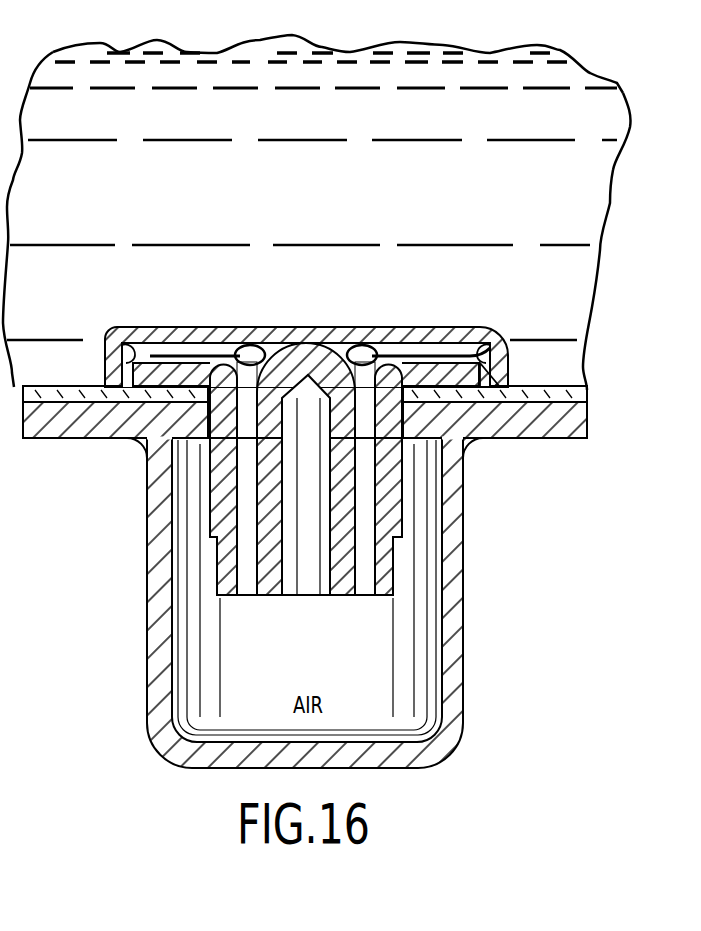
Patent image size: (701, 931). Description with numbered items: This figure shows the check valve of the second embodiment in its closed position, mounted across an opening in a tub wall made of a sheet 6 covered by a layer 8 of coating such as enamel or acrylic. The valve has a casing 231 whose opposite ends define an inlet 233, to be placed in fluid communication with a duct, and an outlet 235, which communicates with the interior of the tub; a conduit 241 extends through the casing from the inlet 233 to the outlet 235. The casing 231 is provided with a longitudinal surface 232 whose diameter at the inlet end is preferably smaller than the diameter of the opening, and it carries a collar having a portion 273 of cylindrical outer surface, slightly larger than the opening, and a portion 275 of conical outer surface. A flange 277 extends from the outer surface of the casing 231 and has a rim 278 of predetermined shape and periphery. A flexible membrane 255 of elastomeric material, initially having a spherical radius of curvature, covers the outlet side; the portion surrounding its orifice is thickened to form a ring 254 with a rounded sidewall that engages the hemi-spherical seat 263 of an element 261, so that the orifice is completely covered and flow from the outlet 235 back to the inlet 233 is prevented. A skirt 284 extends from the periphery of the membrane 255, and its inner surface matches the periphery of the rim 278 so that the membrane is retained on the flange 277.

The sheet 6 is at (584, 428).
The layer of coating 8 is at (586, 394).
The casing 231 is at (223, 507).
The longitudinal surface 232 is at (383, 573).
The inlet 233 is at (250, 590).
The outlet 235 is at (180, 355).
The conduit 241 is at (240, 588).
The ring 254 is at (247, 347).
The flexible membrane 255 is at (500, 343).
The element 261 is at (327, 590).
The seat 263 is at (322, 340).
The portion of cylindrical outer surface 273 is at (415, 500).
The portion of conical outer surface 275 is at (398, 540).
The flange 277 is at (472, 452).
The rim 278 is at (485, 352).
The skirt 284 is at (112, 347).